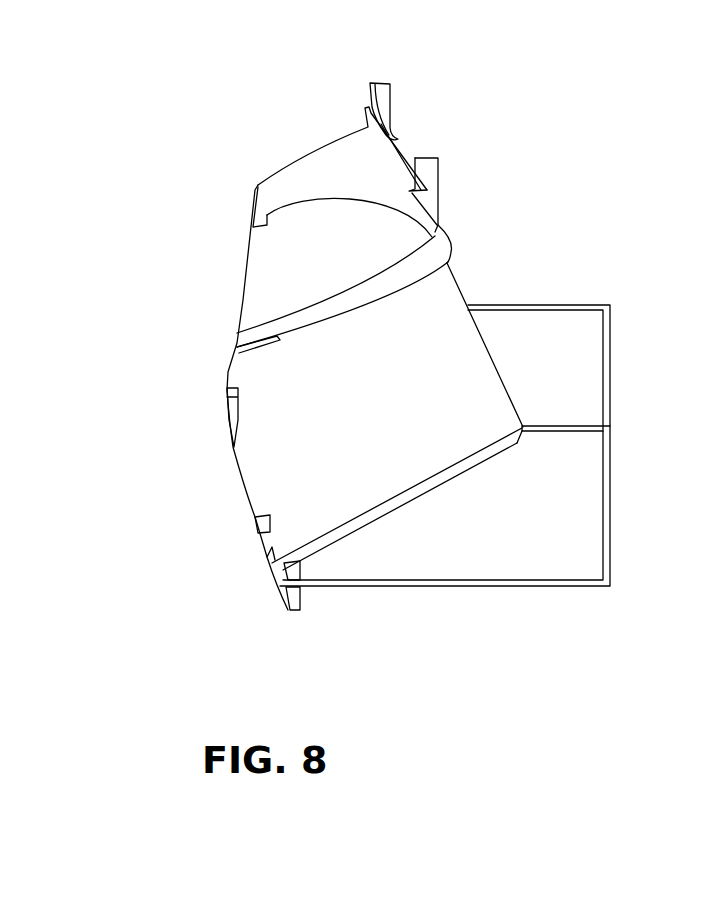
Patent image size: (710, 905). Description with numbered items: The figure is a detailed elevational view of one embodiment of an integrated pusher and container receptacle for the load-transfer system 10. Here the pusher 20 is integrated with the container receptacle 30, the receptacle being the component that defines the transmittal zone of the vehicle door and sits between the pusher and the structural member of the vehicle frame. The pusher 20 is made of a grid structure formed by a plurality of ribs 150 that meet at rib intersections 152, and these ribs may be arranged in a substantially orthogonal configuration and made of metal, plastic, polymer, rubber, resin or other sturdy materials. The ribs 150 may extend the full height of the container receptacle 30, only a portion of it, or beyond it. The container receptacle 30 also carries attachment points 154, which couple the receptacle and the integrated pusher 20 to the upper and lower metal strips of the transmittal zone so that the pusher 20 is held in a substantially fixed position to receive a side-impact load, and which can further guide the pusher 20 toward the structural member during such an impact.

The load-transfer system 10 is at (262, 120).
The pusher 20 is at (523, 305).
The container receptacle 30 is at (277, 278).
The ribs 150 is at (573, 433).
The rib intersections 152 is at (607, 430).
The attachment points 154 is at (380, 98).